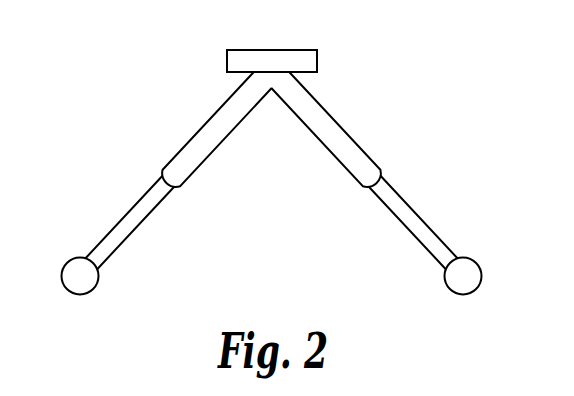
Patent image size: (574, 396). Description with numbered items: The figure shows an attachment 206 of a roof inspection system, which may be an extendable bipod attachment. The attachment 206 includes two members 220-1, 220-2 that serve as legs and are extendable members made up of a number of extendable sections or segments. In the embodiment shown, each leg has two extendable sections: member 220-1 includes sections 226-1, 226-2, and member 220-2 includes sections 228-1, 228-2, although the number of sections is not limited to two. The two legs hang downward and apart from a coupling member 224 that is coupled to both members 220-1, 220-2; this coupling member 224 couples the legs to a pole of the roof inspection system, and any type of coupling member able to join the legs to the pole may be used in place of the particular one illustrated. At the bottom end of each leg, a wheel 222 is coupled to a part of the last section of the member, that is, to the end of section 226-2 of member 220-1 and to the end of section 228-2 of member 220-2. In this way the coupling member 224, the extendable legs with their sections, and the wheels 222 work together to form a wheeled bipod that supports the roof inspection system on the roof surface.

The attachment 206 is at (281, 168).
The coupling member 224 is at (277, 55).
The member 220-1 is at (391, 170).
The member 220-2 is at (151, 170).
The section 226-1 is at (353, 143).
The section 226-2 is at (420, 218).
The section 228-1 is at (190, 143).
The section 228-2 is at (123, 218).
The wheel 222 is at (84, 287).